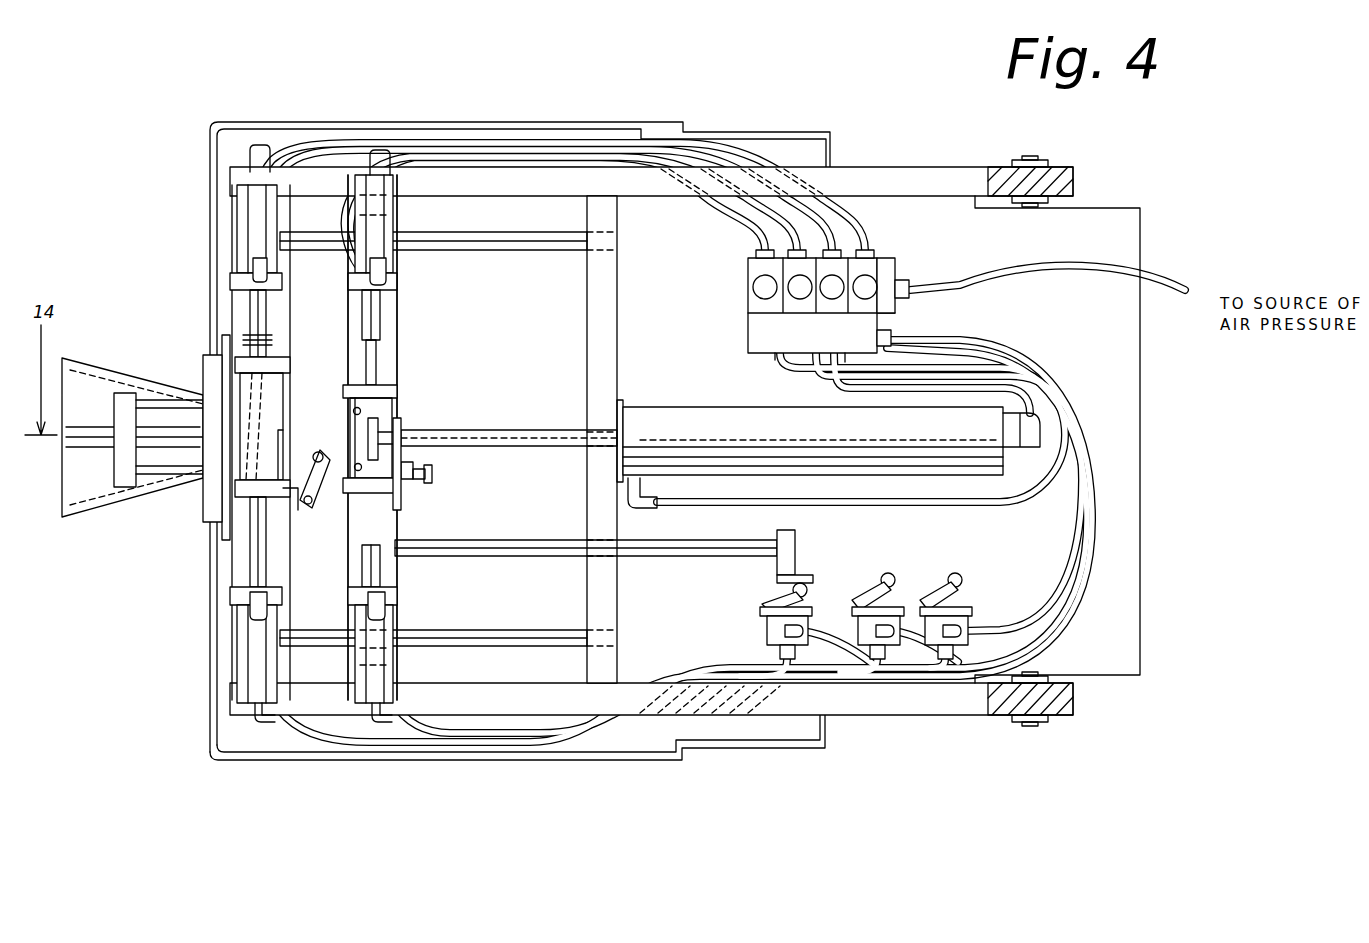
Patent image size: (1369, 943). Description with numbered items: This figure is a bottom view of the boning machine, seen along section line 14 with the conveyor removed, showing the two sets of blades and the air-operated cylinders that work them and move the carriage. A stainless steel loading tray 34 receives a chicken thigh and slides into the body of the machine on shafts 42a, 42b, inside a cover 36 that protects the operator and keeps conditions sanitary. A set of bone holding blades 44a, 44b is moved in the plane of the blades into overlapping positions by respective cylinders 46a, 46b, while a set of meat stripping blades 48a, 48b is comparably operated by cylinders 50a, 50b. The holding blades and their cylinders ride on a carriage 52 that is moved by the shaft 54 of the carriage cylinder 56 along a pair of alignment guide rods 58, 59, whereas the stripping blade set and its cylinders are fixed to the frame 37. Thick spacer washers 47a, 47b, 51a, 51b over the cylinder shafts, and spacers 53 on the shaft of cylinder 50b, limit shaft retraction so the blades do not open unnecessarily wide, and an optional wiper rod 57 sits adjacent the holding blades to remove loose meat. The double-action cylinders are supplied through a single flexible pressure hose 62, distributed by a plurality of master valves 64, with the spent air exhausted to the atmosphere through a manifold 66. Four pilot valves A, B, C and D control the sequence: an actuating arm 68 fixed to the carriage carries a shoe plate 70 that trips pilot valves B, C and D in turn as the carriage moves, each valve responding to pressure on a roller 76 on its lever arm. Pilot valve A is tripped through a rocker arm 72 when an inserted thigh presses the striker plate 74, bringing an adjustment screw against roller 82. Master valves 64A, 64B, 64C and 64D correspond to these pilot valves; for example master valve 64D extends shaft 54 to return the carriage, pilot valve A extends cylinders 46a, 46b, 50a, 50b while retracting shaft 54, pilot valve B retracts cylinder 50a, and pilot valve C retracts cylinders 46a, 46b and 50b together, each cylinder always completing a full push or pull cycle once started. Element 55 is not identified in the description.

The section line 14 is at (605, 428).
The loading tray 34 is at (116, 532).
The cover 36 is at (566, 122).
The frame 37 is at (948, 172).
The shaft 42a is at (176, 490).
The shaft 42b is at (165, 398).
The bone holding blade 44a is at (348, 482).
The bone holding blade 44b is at (348, 412).
The cylinder 46a is at (392, 616).
The cylinder 46b is at (388, 222).
The spacer washer 47a is at (384, 576).
The spacer washer 47b is at (382, 305).
The meat stripping blade 48a is at (280, 452).
The meat stripping blade 48b is at (283, 392).
The cylinder 50a is at (274, 614).
The cylinder 50b is at (278, 266).
The spacer washer 51a is at (268, 566).
The spacer washer 51b is at (264, 312).
The carriage 52 is at (398, 360).
The spacers 53 is at (274, 338).
The shaft 54 is at (522, 436).
The rod 55 is at (378, 346).
The carriage cylinder 56 is at (688, 416).
The wiper rod 57 is at (362, 411).
The alignment guide rod 58 is at (486, 644).
The alignment guide rod 59 is at (500, 248).
The flexible pressure hose 62 is at (1187, 286).
The master valves 64 is at (822, 287).
The master valve 64A is at (758, 313).
The master valve 64B is at (797, 313).
The master valve 64C is at (832, 313).
The master valve 64D is at (898, 316).
The manifold 66 is at (756, 356).
The actuating arm 68 is at (540, 542).
The shoe plate 70 is at (800, 578).
The rocker arm 72 is at (402, 495).
The striker plate 74 is at (380, 424).
The roller 76 is at (790, 590).
The roller 82 is at (322, 468).
The pilot valve A is at (286, 528).
The pilot valve B is at (853, 601).
The pilot valve C is at (858, 624).
The pilot valve D is at (962, 620).